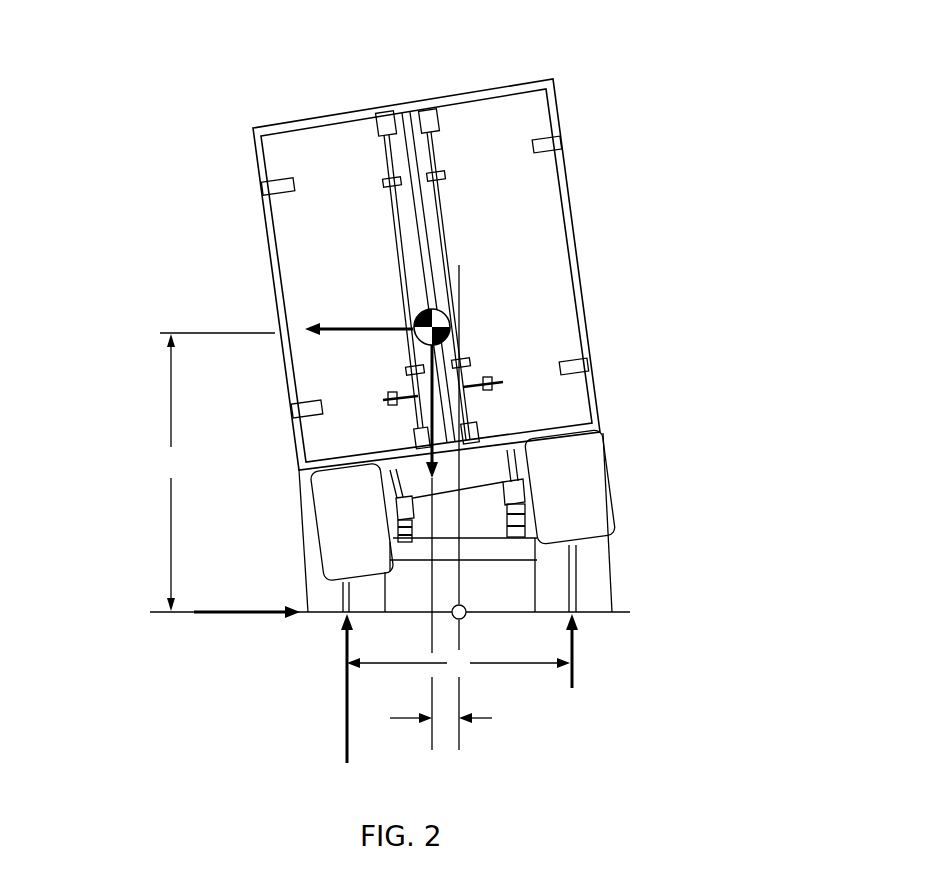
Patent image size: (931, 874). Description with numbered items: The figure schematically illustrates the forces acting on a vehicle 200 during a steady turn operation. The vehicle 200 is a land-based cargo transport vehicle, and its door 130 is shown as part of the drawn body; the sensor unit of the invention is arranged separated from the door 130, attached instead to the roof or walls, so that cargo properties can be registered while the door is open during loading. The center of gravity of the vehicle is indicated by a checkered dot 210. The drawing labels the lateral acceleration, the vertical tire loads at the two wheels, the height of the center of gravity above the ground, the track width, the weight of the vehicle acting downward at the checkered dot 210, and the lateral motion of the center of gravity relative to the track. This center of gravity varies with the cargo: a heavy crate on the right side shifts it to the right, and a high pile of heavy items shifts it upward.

The vehicle 200 is at (126, 73).
The door 130 is at (527, 210).
The checkered dot 210 is at (440, 326).